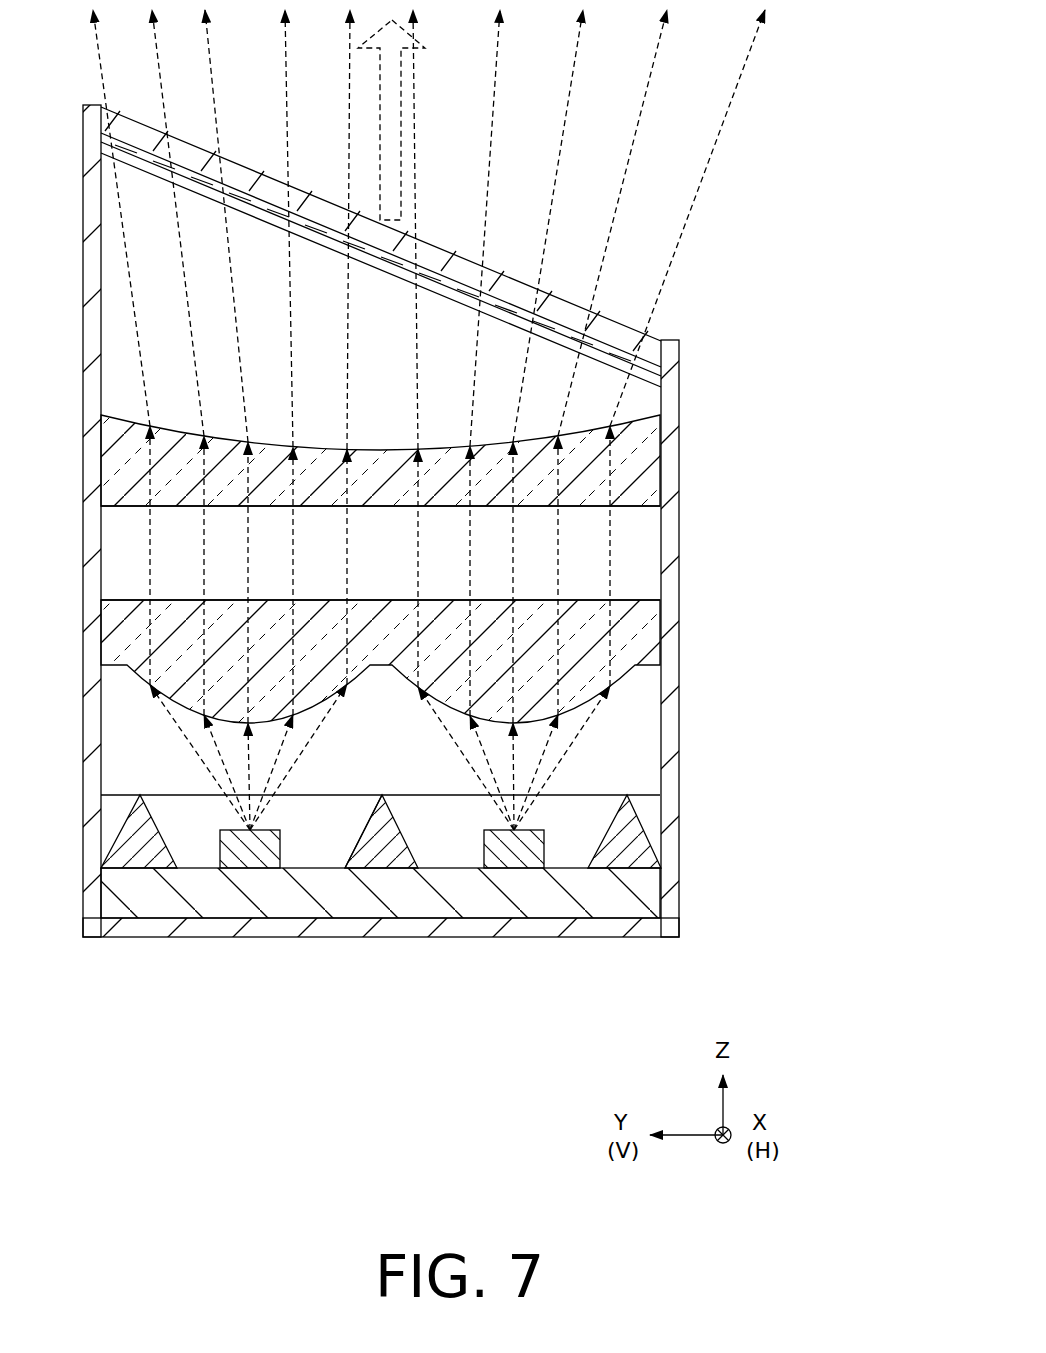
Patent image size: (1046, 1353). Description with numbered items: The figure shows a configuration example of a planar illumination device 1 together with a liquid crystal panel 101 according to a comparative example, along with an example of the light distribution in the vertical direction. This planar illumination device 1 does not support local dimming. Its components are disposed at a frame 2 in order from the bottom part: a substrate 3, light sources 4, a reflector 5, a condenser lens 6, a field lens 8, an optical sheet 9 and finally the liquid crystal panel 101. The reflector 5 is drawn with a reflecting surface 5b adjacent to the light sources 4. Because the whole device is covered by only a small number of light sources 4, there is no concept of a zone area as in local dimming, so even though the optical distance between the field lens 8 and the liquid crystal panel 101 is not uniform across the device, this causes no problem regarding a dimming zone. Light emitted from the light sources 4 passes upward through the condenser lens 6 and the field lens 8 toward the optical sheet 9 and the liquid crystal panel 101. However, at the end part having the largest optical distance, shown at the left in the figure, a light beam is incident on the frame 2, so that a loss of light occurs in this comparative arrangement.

The planar illumination device 1 is at (772, 272).
The liquid crystal panel 101 is at (660, 350).
The optical sheet 9 is at (645, 372).
The field lens 8 is at (650, 462).
The frame 2 is at (665, 553).
The condenser lens 6 is at (650, 632).
The light sources 4 is at (547, 838).
The reflector 5 is at (383, 842).
The reflecting surface 5b is at (352, 836).
The substrate 3 is at (650, 900).